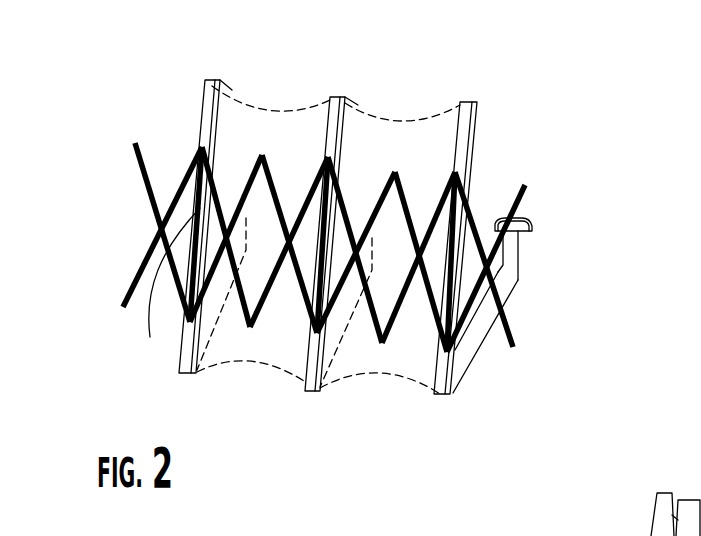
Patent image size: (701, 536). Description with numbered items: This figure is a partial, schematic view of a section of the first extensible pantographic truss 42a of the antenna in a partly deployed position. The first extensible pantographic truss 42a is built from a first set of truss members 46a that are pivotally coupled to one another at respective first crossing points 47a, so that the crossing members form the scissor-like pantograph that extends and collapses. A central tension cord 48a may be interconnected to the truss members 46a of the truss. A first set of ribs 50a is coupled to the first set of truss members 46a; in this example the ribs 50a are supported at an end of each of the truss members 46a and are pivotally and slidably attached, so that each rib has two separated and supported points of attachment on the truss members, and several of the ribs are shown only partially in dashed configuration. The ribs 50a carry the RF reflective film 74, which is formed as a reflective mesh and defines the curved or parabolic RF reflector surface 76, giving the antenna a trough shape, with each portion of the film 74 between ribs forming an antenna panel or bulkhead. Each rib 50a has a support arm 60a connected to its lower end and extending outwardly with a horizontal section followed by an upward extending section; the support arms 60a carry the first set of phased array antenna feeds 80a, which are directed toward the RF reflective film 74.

The first extensible pantographic truss 42a is at (499, 183).
The first set of truss members 46a is at (150, 202).
The first crossing points 47a is at (164, 290).
The central tension cord 48a is at (258, 195).
The first set of ribs 50a is at (433, 395).
The support arm 60a is at (482, 348).
The RF reflective film 74 is at (243, 97).
The RF reflector surface 76 is at (347, 163).
The first set of phased array antenna feeds 80a is at (522, 232).